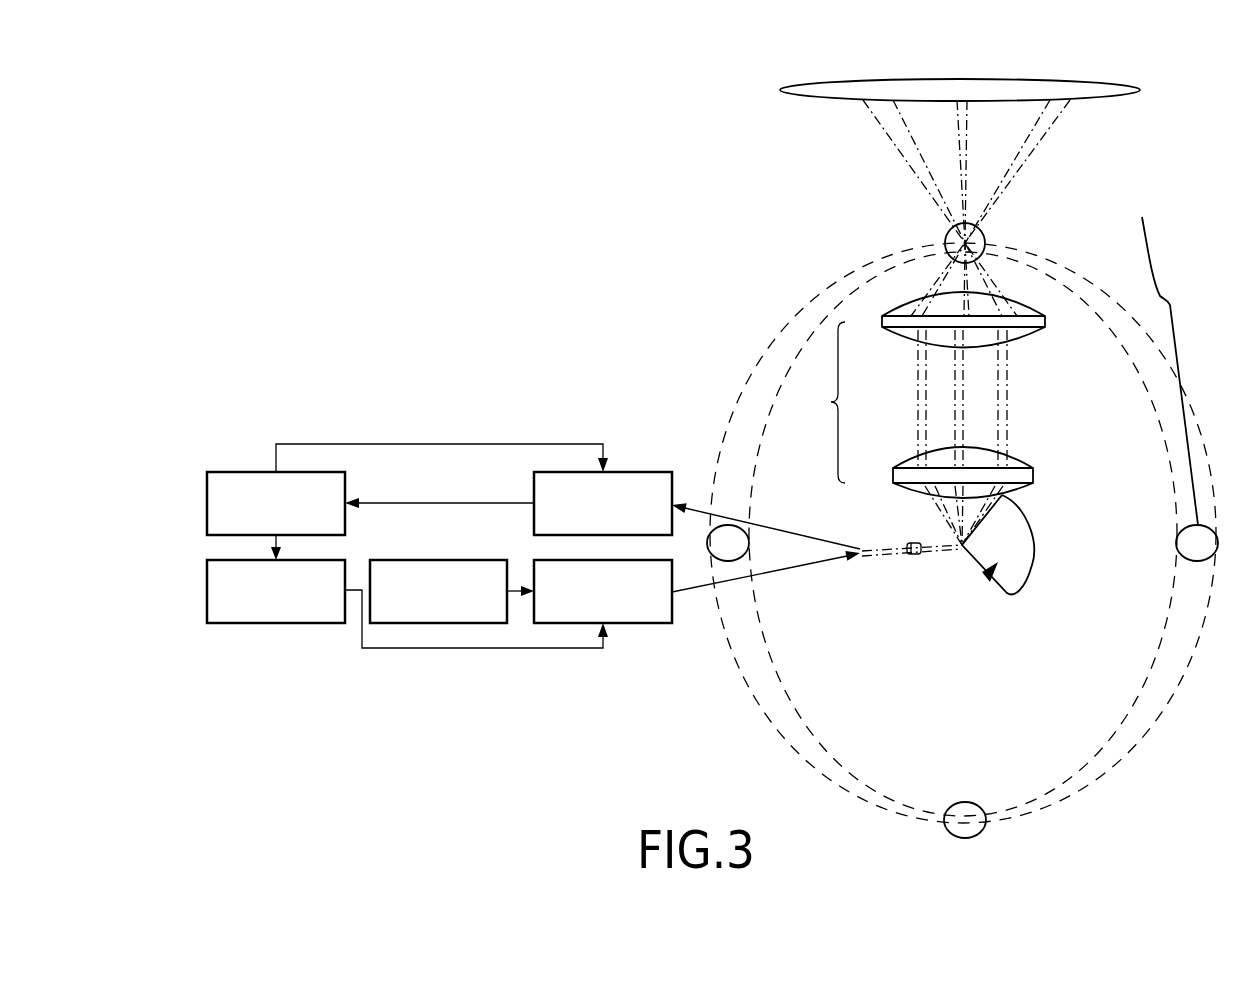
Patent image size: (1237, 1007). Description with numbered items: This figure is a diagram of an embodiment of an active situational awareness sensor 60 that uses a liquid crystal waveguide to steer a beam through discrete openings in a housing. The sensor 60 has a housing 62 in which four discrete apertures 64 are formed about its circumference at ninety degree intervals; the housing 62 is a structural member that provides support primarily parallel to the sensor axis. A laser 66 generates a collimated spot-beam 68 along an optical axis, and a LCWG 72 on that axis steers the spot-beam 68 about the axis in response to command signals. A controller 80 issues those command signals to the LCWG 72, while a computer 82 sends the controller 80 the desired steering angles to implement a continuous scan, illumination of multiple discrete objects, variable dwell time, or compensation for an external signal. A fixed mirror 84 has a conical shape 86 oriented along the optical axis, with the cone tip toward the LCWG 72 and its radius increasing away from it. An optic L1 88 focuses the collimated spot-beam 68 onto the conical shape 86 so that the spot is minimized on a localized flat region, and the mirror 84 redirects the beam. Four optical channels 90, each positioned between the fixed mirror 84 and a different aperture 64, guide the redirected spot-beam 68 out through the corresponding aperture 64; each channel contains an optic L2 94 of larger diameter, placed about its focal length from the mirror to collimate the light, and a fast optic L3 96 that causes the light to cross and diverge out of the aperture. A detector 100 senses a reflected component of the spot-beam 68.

The active situational awareness sensor 60 is at (498, 270).
The housing 62 is at (772, 337).
The discrete apertures 64 is at (985, 236).
The laser 66 is at (415, 560).
The collimated spot-beam 68 is at (820, 84).
The LCWG 72 is at (628, 624).
The controller 80 is at (315, 624).
The computer 82 is at (207, 505).
The fixed mirror 84 is at (1024, 513).
The conical shape 86 is at (989, 578).
The optic L1 88 is at (896, 628).
The optical channels 90 is at (900, 433).
The optic L2 94 is at (1010, 453).
The optic L3 96 is at (1022, 340).
The detector 100 is at (628, 472).
The optic L1 is at (914, 557).
The optic L2 is at (1035, 474).
The optic L3 is at (1047, 321).